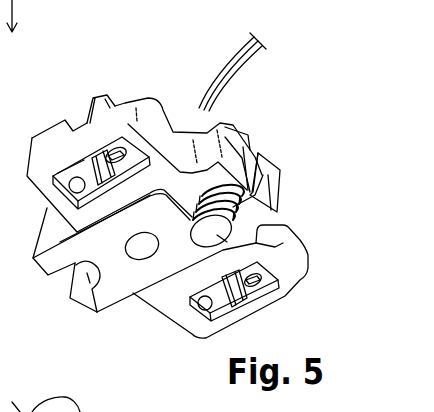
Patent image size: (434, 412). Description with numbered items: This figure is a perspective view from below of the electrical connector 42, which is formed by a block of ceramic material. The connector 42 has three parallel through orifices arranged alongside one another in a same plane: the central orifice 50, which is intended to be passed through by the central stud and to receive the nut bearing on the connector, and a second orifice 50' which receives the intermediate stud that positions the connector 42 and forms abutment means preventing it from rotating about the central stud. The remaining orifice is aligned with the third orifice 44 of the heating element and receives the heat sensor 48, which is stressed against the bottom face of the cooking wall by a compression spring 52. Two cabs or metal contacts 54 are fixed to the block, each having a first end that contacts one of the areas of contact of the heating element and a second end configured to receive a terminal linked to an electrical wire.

The electrical connector 42 is at (287, 128).
The third orifice 44 is at (57, 3).
The heat sensor 48 is at (289, 231).
The central orifice 50 is at (142, 288).
The orifice 50' is at (94, 314).
The compression spring 52 is at (280, 170).
The metal contacts 54 is at (103, 100).